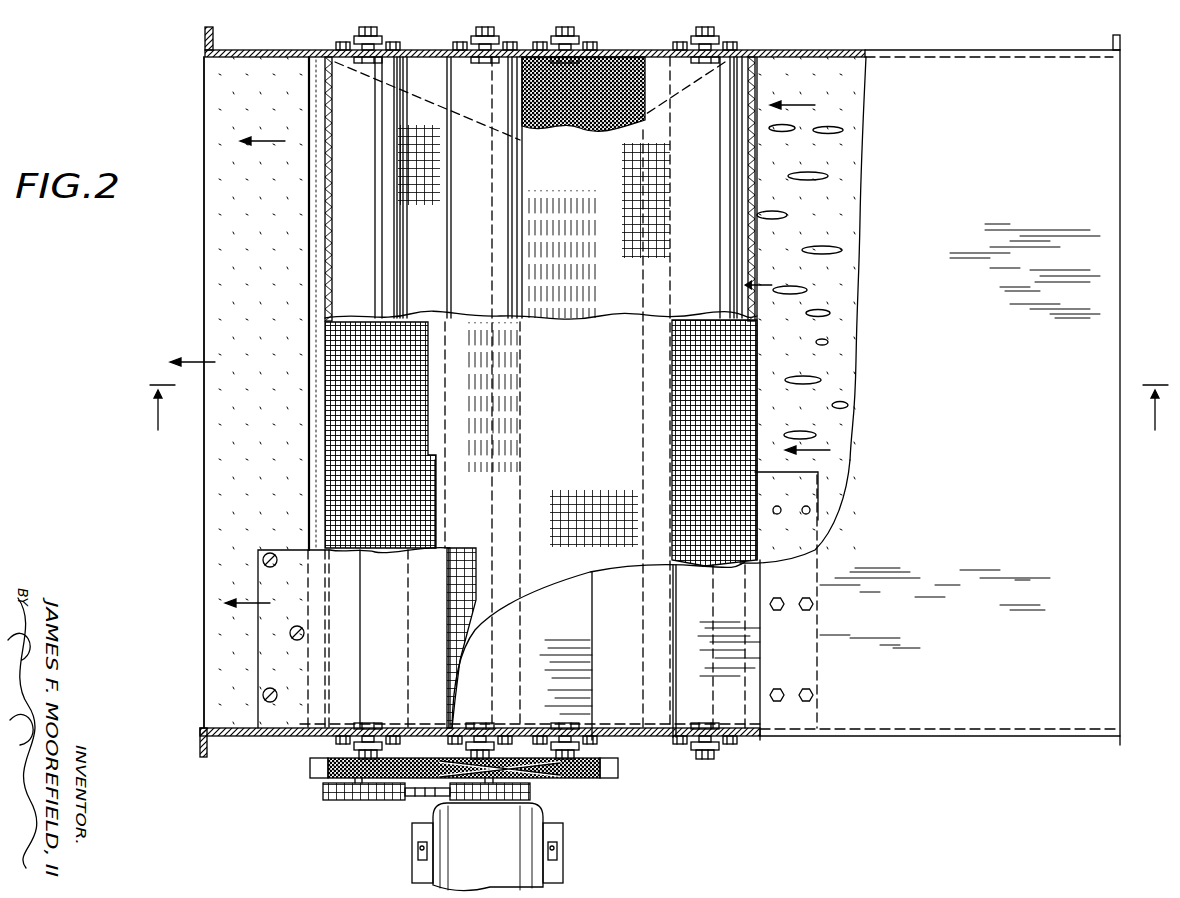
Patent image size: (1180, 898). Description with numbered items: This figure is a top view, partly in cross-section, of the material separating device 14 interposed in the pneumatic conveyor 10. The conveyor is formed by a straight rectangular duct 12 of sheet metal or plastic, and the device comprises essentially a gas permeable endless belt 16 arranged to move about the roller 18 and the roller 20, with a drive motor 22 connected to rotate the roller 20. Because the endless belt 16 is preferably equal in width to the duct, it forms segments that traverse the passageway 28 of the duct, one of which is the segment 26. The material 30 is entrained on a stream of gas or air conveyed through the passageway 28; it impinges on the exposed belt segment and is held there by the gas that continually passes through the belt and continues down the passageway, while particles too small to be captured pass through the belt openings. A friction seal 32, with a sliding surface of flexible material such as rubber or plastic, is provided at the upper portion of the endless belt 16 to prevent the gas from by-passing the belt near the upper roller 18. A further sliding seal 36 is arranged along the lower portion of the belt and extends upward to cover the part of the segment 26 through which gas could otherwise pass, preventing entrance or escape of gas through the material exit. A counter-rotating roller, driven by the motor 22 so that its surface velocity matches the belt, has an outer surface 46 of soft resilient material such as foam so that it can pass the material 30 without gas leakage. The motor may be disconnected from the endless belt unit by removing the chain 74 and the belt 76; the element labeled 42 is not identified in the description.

The pneumatic conveyor 10 is at (948, 745).
The rectangular duct 12 is at (980, 400).
The material separating device 14 is at (638, 788).
The endless belt 16 is at (738, 418).
The roller 18 is at (732, 166).
The roller 20 is at (336, 212).
The drive motor 22 is at (478, 860).
The belt segment 26 is at (618, 314).
The passageway 28 is at (284, 484).
The material 30 is at (818, 310).
The friction seal 32 is at (816, 673).
The seal 36 is at (292, 562).
The filter element 42 is at (466, 222).
The outer surface 46 is at (626, 76).
The chain 74 is at (327, 790).
The belt 76 is at (312, 766).